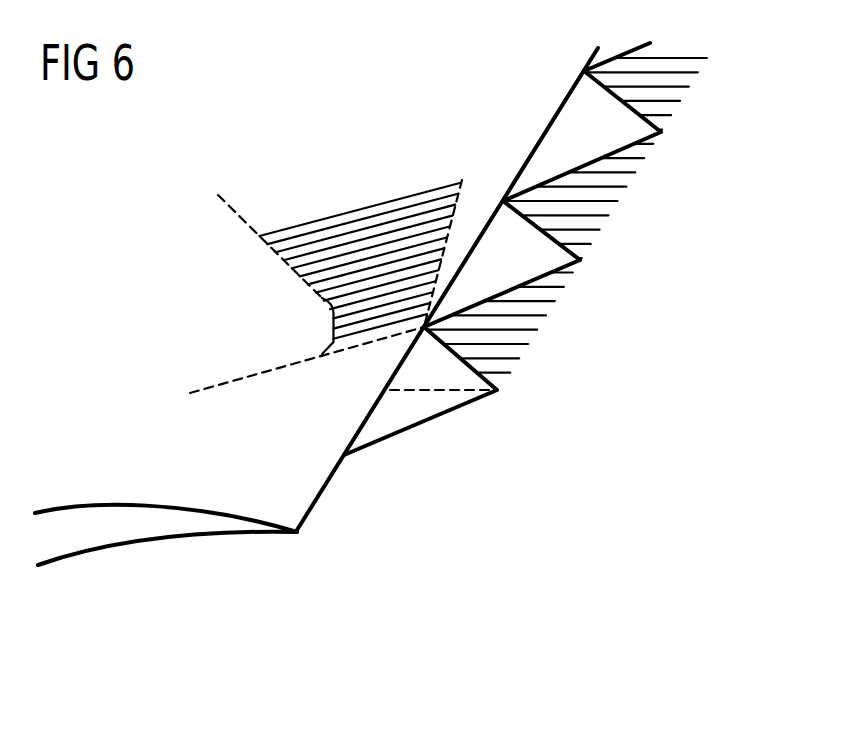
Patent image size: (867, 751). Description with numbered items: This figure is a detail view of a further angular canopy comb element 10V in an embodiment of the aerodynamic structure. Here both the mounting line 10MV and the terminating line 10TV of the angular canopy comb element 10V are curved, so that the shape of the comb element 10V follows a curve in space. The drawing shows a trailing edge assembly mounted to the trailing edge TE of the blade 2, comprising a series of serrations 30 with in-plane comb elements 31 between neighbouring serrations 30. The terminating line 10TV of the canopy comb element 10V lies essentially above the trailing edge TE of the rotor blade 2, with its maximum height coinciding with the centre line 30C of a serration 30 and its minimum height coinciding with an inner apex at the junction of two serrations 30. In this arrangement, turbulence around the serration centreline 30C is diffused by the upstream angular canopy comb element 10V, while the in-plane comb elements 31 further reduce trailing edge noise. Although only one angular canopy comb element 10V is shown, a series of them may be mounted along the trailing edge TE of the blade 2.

The rotor blade 2 is at (186, 561).
The trailing edge TE is at (543, 135).
The serration 30 is at (578, 102).
The in-plane comb element 31 is at (620, 175).
The centre line of a serration 30C is at (442, 393).
The angular canopy comb element 10V is at (360, 171).
The mounting line 10MV is at (270, 183).
The terminating line 10TV is at (456, 207).